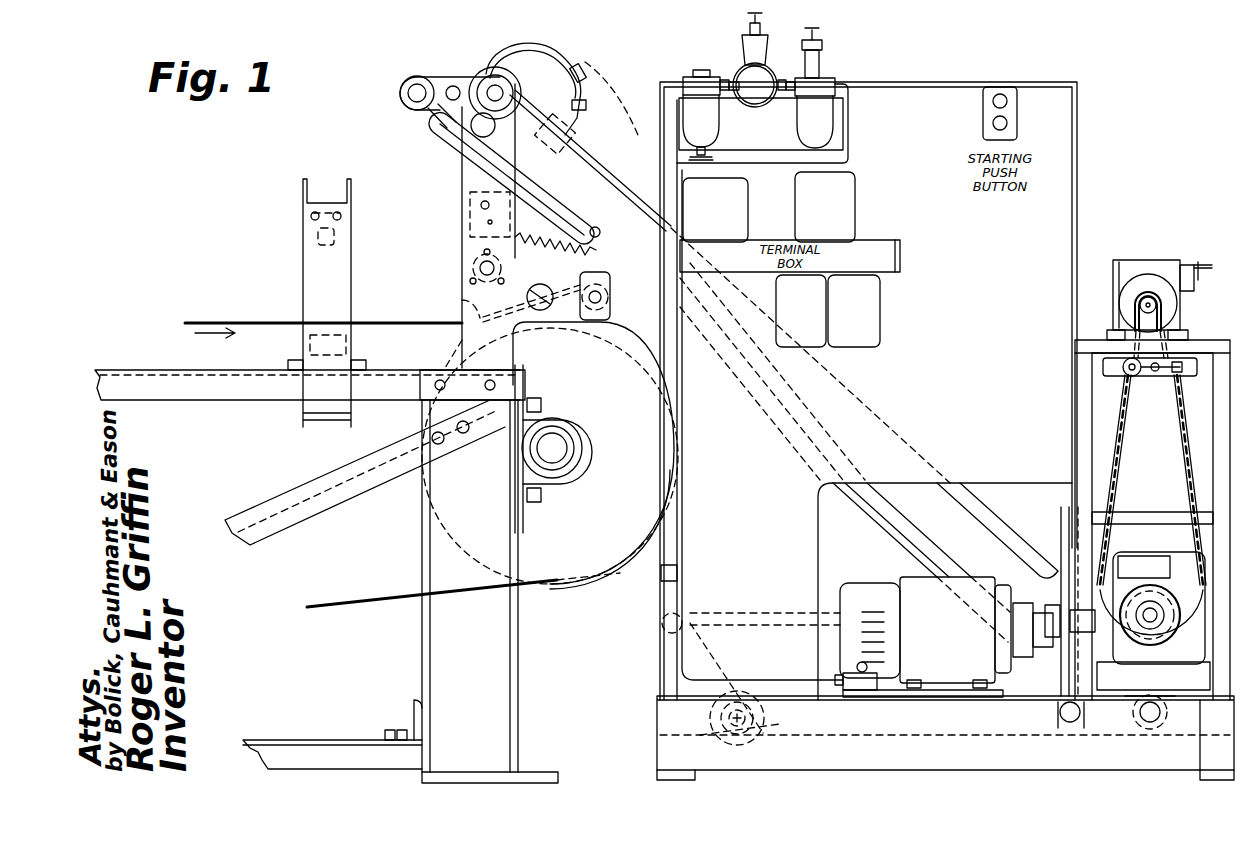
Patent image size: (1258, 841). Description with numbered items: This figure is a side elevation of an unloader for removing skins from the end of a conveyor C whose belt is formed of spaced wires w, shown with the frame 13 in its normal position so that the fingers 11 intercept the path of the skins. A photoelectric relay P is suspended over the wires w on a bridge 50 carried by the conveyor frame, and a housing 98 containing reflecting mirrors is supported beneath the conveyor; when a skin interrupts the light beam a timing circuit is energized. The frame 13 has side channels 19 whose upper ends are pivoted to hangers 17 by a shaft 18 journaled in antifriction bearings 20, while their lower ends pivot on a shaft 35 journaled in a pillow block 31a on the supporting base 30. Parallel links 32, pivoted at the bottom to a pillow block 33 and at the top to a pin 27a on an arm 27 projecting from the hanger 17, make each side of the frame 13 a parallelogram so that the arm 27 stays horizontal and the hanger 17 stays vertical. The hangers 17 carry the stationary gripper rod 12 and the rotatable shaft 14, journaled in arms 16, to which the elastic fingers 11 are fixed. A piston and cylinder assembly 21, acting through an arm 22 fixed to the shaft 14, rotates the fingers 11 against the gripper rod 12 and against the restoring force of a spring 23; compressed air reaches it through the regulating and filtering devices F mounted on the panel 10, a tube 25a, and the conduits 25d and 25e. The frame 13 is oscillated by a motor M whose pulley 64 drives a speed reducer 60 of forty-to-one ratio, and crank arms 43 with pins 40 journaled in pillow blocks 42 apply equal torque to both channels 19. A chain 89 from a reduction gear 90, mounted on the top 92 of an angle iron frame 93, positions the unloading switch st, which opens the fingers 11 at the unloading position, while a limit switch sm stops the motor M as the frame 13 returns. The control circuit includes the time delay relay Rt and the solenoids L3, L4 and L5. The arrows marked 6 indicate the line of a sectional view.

The clearance gap 6 is at (352, 173).
The panel 10 is at (1038, 76).
The fingers 11 is at (462, 300).
The gripper rod 12 is at (478, 268).
The frame 13 is at (594, 145).
The shaft 14 is at (596, 306).
The arms 16 is at (560, 306).
The hangers 17 is at (451, 216).
The shaft 18 is at (490, 86).
The channels 19 is at (605, 186).
The antifriction bearings 20 is at (500, 92).
The piston and cylinder assembly 21 is at (565, 216).
The arm 22 is at (598, 236).
The spring 23 is at (505, 238).
The tube 25a is at (850, 100).
The conduit 25d is at (612, 90).
The conduit 25e is at (565, 54).
The arm 27 is at (425, 78).
The pin 27a is at (405, 100).
The supporting base 30 is at (660, 722).
The pillow block 31a is at (1222, 752).
The parallel links 32 is at (877, 551).
The pillow block 33 is at (1040, 735).
The shaft 35 is at (1152, 732).
The pin 40 is at (745, 736).
The pillow block 42 is at (770, 738).
The crank arms 43 is at (690, 674).
The bridge 50 is at (334, 187).
The speed reducer 60 is at (1165, 548).
The pulley 64 is at (960, 700).
The chain 89 is at (1178, 418).
The reduction gear 90 is at (1138, 272).
The top 92 is at (1195, 340).
The angle iron frame 93 is at (1075, 366).
The housing 98 is at (348, 344).
The photoelectric relay P is at (318, 240).
The conveyor C is at (209, 304).
The wires w is at (268, 322).
The pressure regulating and filtering devices F is at (853, 70).
The electric motor M is at (946, 633).
The time delay relay Rt is at (715, 210).
The solenoid L3 is at (825, 207).
The solenoid L4 is at (801, 311).
The solenoid L5 is at (854, 311).
The unloading switch st is at (1144, 567).
The limit switch sm is at (1168, 712).